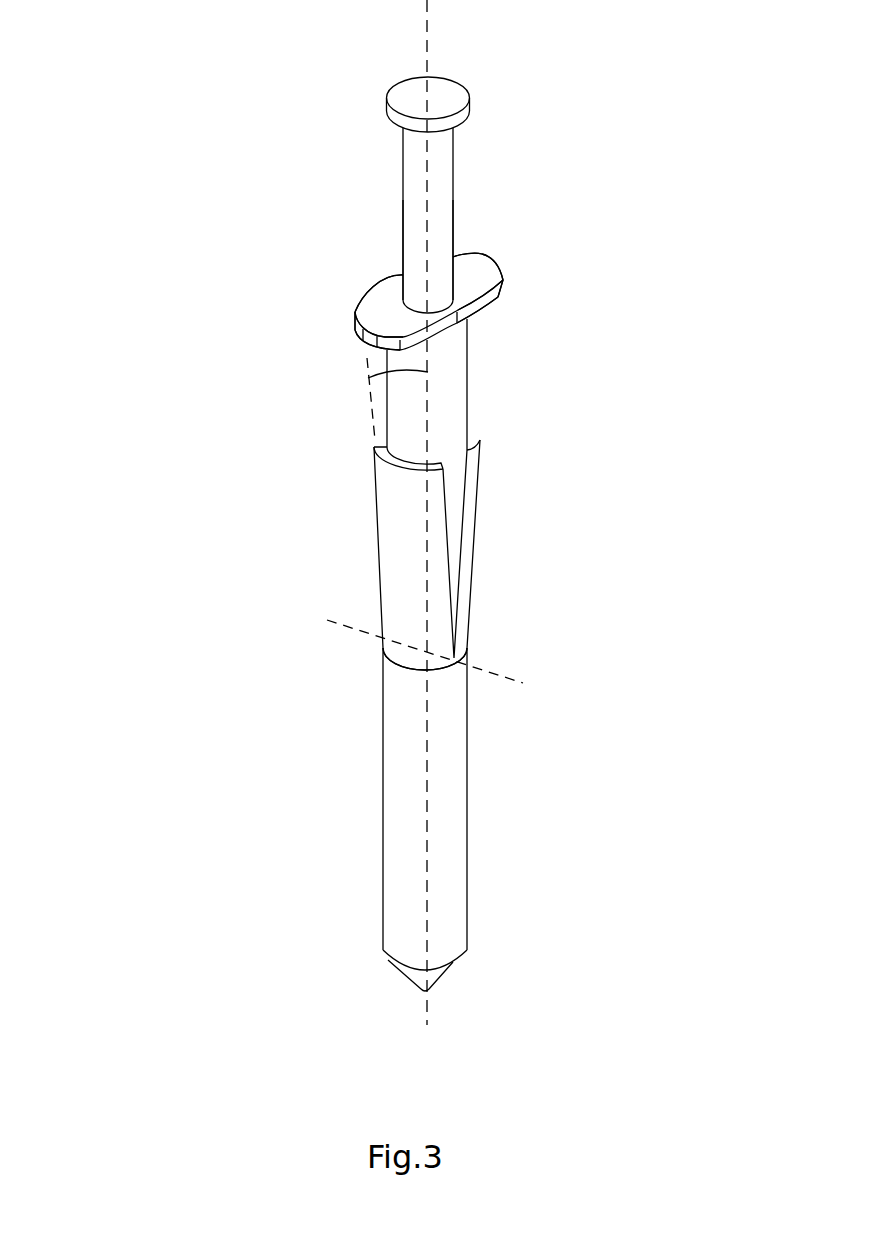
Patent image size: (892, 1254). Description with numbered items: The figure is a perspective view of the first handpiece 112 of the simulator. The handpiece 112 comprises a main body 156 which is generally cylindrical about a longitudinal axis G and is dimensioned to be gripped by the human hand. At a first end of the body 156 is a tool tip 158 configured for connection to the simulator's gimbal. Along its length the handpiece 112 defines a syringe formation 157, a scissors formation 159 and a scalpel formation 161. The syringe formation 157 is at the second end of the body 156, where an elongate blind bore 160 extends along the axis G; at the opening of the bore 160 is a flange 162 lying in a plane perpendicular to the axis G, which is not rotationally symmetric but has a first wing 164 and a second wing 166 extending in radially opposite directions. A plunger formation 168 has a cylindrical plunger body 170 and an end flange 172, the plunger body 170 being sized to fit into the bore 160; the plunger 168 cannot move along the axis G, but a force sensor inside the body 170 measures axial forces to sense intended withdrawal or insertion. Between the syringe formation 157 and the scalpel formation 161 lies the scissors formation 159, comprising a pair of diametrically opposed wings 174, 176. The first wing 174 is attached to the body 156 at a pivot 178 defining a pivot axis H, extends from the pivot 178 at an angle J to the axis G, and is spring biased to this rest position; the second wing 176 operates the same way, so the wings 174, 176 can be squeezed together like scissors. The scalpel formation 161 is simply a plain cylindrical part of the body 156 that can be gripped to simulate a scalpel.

The first handpiece 112 is at (633, 211).
The main body 156 is at (443, 733).
The syringe formation 157 is at (535, 131).
The tool tip 158 is at (440, 977).
The scissors formation 159 is at (533, 551).
The elongate blind bore 160 is at (467, 312).
The scalpel formation 161 is at (505, 900).
The flange 162 is at (388, 312).
The first wing 164 is at (387, 303).
The second wing 166 is at (478, 273).
The plunger formation 168 is at (404, 243).
The plunger body 170 is at (404, 182).
The end flange 172 is at (412, 103).
The first wing 174 is at (398, 557).
The second wing 176 is at (472, 587).
The pivot 178 is at (410, 657).
The longitudinal axis G is at (449, 512).
The pivot axis H is at (415, 651).
The angle J is at (397, 399).